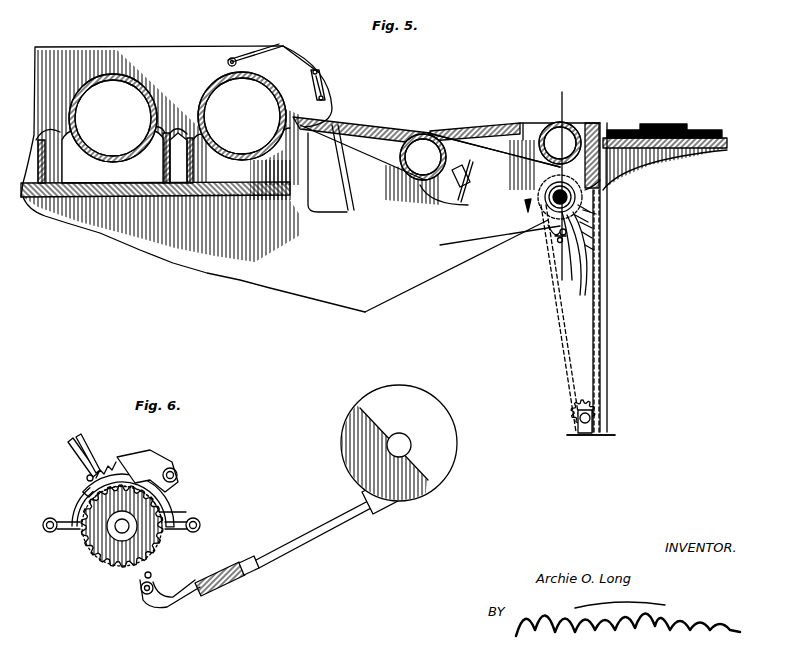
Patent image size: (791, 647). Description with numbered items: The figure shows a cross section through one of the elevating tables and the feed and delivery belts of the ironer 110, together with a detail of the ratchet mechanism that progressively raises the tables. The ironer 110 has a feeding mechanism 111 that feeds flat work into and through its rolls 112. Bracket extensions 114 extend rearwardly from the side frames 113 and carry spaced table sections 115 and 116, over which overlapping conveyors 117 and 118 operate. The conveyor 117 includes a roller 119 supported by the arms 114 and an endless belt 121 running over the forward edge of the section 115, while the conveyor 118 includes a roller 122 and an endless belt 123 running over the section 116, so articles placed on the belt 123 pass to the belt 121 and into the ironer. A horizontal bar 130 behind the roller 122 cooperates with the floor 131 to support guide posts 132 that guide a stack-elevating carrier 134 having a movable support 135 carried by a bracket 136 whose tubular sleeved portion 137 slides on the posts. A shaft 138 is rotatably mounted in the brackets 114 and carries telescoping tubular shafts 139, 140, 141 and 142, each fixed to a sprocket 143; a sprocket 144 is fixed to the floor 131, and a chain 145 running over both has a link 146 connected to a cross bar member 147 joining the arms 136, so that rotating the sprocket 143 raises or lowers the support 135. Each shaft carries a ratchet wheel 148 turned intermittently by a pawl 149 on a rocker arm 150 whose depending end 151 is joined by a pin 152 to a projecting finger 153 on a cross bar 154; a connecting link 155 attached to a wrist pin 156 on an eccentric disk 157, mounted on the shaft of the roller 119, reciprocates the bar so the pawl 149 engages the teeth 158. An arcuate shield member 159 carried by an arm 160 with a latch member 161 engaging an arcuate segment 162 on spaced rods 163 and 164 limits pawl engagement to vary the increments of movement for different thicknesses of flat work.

In FIG. 5, the ironer 110 is at (100, 55).
In FIG. 5, the feeding mechanism 111 is at (668, 118).
In FIG. 5, the rolls 112 is at (140, 82).
In FIG. 5, the side frames 113 is at (118, 233).
In FIG. 5, the bracket extensions 114 is at (427, 265).
In FIG. 5, the table section 115 is at (343, 117).
In FIG. 5, the table section 116 is at (505, 122).
In FIG. 5, the conveyor 117 is at (408, 128).
In FIG. 5, the conveyor 118 is at (545, 120).
In FIG. 5, the roller 119 is at (420, 205).
In FIG. 5, the endless belt 121 is at (380, 175).
In FIG. 5, the roller 122 is at (560, 124).
In FIG. 5, the endless belt 123 is at (470, 176).
In FIG. 5, the horizontal bar 130 is at (604, 120).
In FIG. 5, the floor 131 is at (608, 436).
In FIG. 5, the guide post 132 is at (603, 342).
In FIG. 5, the stack-elevating carrier 134 is at (715, 152).
In FIG. 5, the support 135 is at (724, 138).
In FIG. 5, the bracket 136 is at (690, 165).
In FIG. 5, the tubular sleeved portion 137 is at (603, 120).
In FIG. 5, the shaft 138 is at (552, 208).
In FIG. 6, the shaft 138 is at (118, 548).
In FIG. 5, the telescoping tubular shaft 139 is at (598, 228).
In FIG. 5, the telescoping tubular shaft 140 is at (610, 232).
In FIG. 5, the telescoping tubular shaft 141 is at (602, 244).
In FIG. 5, the telescoping tubular shaft 142 is at (598, 258).
In FIG. 5, the sprocket 143 is at (590, 196).
In FIG. 5, the sprocket 144 is at (598, 412).
In FIG. 5, the chain 145 is at (556, 355).
In FIG. 5, the link 146 is at (590, 218).
In FIG. 5, the cross bar member 147 is at (620, 207).
In FIG. 5, the ratchet wheel 148 is at (603, 277).
In FIG. 6, the ratchet wheel 148 is at (104, 570).
In FIG. 6, the pawl 149 is at (150, 460).
In FIG. 6, the rocker arm 150 is at (170, 483).
In FIG. 5, the depending end 151 is at (556, 248).
In FIG. 6, the depending end 151 is at (153, 576).
In FIG. 5, the pin 152 is at (558, 248).
In FIG. 6, the pin 152 is at (143, 596).
In FIG. 5, the projecting finger 153 is at (556, 240).
In FIG. 6, the projecting finger 153 is at (180, 608).
In FIG. 5, the cross bar 154 is at (500, 235).
In FIG. 6, the cross bar 154 is at (214, 590).
In FIG. 5, the connecting link 155 is at (470, 200).
In FIG. 6, the connecting link 155 is at (305, 545).
In FIG. 6, the wrist pin 156 is at (424, 496).
In FIG. 6, the eccentric disk 157 is at (445, 428).
In FIG. 5, the teeth 158 is at (576, 257).
In FIG. 6, the teeth 158 is at (188, 508).
In FIG. 6, the shield member 159 is at (76, 493).
In FIG. 6, the arm 160 is at (108, 462).
In FIG. 6, the latch member 161 is at (88, 444).
In FIG. 6, the arcuate segment 162 is at (80, 549).
In FIG. 6, the rod 163 is at (47, 518).
In FIG. 6, the rod 164 is at (201, 523).